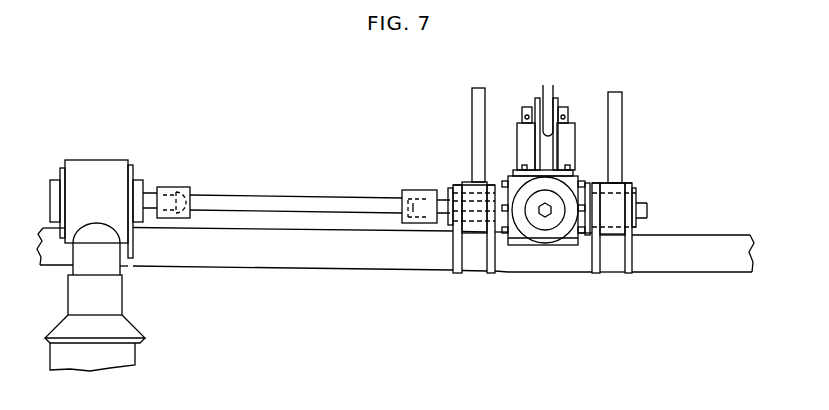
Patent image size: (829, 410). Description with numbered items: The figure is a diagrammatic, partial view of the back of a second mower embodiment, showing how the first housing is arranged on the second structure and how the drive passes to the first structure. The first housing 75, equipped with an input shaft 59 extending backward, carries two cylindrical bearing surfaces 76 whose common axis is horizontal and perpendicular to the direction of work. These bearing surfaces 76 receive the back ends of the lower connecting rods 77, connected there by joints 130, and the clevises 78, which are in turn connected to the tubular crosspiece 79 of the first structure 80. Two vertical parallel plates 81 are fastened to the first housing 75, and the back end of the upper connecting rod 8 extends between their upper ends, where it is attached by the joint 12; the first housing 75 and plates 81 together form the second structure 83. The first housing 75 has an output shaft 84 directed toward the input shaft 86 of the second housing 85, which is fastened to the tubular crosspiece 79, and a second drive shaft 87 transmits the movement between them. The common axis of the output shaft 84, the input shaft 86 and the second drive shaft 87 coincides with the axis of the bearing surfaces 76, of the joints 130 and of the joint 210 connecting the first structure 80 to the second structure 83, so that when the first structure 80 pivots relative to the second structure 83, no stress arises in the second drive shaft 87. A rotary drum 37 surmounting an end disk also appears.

The upper connecting rod 8 is at (552, 88).
The joint 12 is at (568, 108).
The rotary drum 37 is at (57, 352).
The input shaft 59 is at (548, 213).
The first housing 75 is at (521, 239).
The cylindrical bearing surfaces 76 is at (448, 189).
The lower connecting rods 77 is at (477, 105).
The clevises 78 is at (492, 274).
The tubular crosspiece 79 is at (217, 266).
The first structure 80 is at (702, 275).
The parallel plates 81 is at (518, 130).
The second structure 83 is at (583, 148).
The output shaft 84 is at (443, 214).
The second housing 85 is at (97, 163).
The input shaft 86 is at (148, 197).
The second drive shaft 87 is at (277, 202).
The joints 130 is at (467, 181).
The joint 210 is at (636, 217).